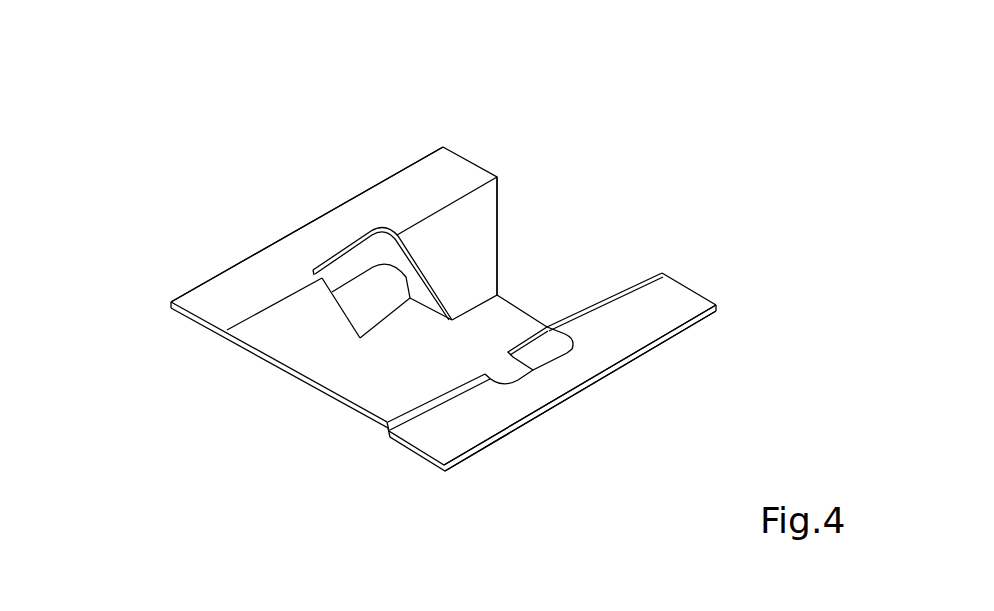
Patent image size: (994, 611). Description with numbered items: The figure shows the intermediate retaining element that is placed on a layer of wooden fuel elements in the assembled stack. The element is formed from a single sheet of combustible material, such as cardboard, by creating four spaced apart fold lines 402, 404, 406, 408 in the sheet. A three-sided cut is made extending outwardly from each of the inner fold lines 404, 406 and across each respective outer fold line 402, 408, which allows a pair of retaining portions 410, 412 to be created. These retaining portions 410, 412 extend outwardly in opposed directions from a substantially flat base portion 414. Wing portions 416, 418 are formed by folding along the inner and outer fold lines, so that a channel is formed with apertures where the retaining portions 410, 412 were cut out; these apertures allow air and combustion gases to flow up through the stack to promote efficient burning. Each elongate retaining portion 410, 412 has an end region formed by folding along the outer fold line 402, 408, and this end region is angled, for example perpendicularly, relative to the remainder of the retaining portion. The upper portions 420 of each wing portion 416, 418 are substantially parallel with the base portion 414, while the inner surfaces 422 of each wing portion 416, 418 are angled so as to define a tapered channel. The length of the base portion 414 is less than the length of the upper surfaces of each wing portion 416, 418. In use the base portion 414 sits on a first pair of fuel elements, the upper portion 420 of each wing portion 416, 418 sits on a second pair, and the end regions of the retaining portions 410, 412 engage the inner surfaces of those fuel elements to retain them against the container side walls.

The fold line 402 is at (228, 338).
The fold line 404 is at (330, 390).
The fold line 406 is at (548, 328).
The fold line 408 is at (662, 273).
The retaining portion 410 is at (373, 283).
The retaining portion 412 is at (556, 415).
The base portion 414 is at (373, 395).
The wing portion 416 is at (218, 230).
The wing portion 418 is at (493, 453).
The upper portion 420 is at (455, 167).
The inner surface 422 is at (477, 243).